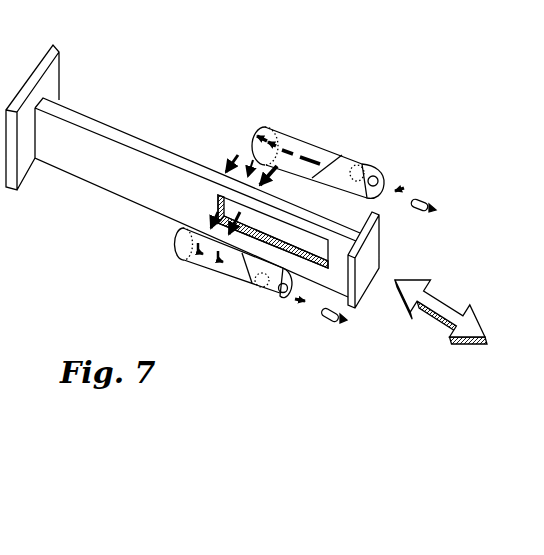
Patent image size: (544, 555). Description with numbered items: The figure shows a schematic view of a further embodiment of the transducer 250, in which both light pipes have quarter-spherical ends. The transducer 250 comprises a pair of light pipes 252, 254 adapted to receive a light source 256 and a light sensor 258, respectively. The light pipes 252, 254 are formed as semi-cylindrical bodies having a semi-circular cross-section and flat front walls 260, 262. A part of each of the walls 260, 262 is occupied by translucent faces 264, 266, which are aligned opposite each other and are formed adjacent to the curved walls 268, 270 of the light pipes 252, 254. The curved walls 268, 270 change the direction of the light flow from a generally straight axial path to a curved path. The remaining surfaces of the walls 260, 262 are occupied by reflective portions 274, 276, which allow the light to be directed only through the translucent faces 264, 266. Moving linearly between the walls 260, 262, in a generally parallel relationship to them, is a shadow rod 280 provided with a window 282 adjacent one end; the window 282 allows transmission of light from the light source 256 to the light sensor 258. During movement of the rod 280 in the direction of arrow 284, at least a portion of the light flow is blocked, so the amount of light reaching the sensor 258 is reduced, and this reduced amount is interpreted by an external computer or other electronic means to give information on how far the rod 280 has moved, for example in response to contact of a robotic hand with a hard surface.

The transducer 250 is at (186, 86).
The light pipe 252 is at (333, 136).
The light pipe 254 is at (206, 268).
The light source 256 is at (428, 204).
The light sensor 258 is at (326, 314).
The flat front wall 260 is at (370, 200).
The flat front wall 262 is at (350, 308).
The translucent face 264 is at (296, 144).
The translucent face 266 is at (178, 220).
The curved wall 268 is at (257, 128).
The curved wall 270 is at (177, 248).
The reflective portion 274 is at (366, 166).
The reflective portion 276 is at (240, 253).
The shadow rod 280 is at (77, 120).
The window 282 is at (322, 247).
The arrow 284 is at (447, 300).